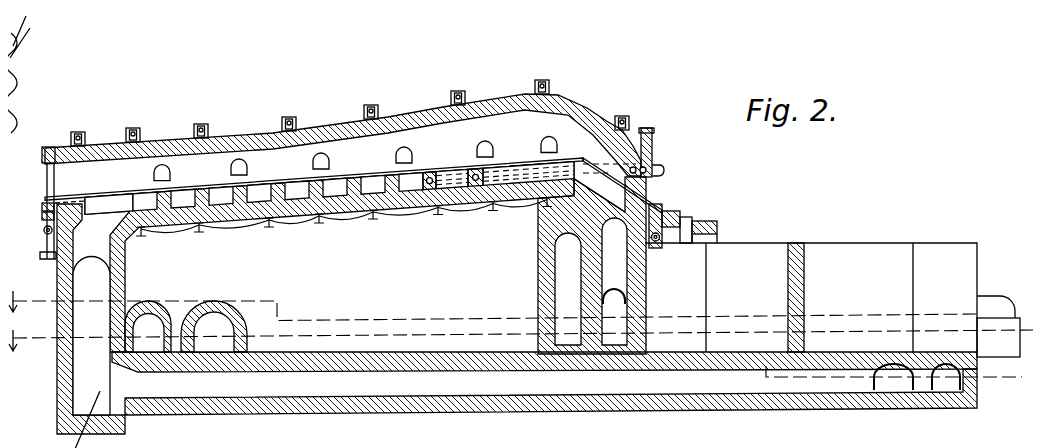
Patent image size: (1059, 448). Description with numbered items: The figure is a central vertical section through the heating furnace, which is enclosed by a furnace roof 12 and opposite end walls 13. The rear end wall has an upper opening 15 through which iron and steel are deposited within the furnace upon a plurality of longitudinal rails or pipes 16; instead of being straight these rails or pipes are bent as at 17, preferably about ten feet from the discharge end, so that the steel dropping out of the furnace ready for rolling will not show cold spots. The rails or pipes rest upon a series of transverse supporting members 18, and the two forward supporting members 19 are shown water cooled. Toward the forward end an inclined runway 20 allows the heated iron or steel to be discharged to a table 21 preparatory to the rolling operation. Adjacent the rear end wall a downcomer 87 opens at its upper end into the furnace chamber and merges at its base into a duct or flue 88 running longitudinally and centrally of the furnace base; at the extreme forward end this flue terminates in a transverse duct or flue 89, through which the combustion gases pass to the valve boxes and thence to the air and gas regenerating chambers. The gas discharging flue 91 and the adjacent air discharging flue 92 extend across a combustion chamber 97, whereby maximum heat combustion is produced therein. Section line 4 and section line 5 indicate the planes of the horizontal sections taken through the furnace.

The section line 4- 4 is at (1025, 310).
The section line 5- 5 is at (1014, 359).
The furnace roof 12 is at (313, 121).
The end walls 13 is at (969, 259).
The upper opening 15 is at (47, 171).
The longitudinal rails or pipes 16 is at (186, 177).
The bend 17 is at (437, 393).
The transverse supporting members 18 is at (246, 183).
The water cooled supporting members 19 is at (465, 163).
The inclined runway 20 is at (591, 154).
The table 21 is at (690, 210).
The downcomer 87 is at (85, 227).
The duct or flue 88 is at (299, 374).
The transverse duct or flue 89 is at (895, 369).
The gas discharging flue 91 is at (556, 249).
The air discharging flue 92 is at (611, 298).
The combustion chamber 97 is at (591, 188).